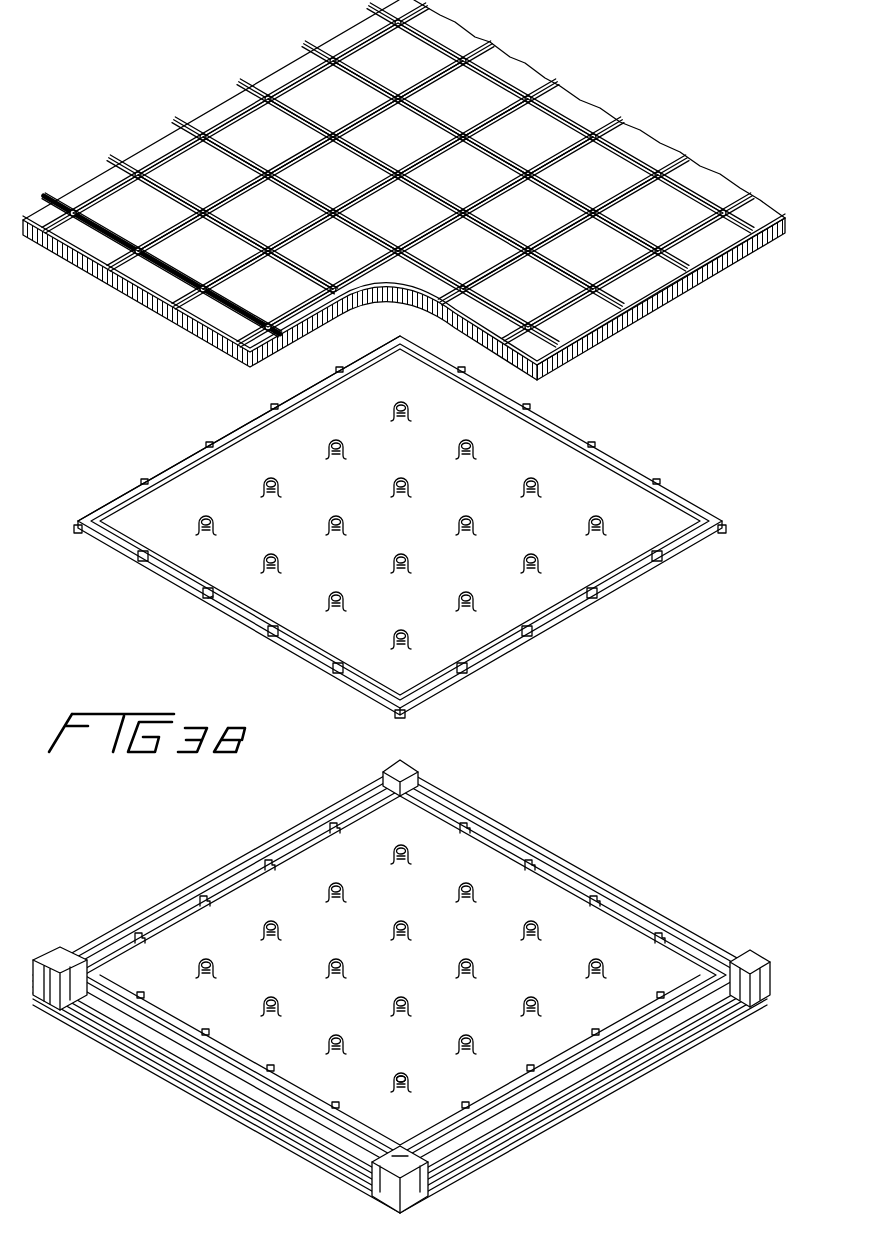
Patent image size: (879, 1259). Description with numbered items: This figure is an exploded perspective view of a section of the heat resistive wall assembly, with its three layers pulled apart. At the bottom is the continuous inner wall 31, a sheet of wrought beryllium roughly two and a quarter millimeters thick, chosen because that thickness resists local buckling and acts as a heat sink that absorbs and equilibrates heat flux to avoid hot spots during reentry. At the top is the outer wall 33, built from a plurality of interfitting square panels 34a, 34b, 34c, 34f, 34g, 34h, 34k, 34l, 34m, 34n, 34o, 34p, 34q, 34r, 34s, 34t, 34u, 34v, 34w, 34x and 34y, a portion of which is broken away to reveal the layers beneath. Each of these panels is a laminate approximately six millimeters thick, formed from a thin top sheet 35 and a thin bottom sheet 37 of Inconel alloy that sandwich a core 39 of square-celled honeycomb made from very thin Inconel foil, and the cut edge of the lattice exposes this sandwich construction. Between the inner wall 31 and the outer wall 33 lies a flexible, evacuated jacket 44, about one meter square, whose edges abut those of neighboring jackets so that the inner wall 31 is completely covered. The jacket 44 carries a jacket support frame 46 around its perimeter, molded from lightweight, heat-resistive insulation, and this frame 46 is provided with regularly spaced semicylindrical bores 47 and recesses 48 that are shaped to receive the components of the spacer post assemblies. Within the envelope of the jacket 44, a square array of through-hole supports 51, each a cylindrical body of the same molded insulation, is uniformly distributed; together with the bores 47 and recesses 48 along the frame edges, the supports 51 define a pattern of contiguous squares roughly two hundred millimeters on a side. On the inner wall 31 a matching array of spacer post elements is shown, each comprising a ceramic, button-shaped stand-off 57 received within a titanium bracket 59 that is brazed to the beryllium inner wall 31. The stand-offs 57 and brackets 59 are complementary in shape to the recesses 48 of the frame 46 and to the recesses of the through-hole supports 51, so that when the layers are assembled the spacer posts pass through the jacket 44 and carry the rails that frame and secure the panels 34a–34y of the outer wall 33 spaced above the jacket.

The inner wall 31 is at (401, 986).
The outer wall 33 is at (228, 96).
The panel 34a is at (120, 224).
The panel 34b is at (187, 262).
The panel 34c is at (250, 300).
The panel 34f is at (191, 186).
The panel 34g is at (255, 224).
The panel 34h is at (314, 262).
The panel 34k is at (256, 148).
The panel 34l is at (318, 186).
The panel 34m is at (383, 224).
The panel 34n is at (448, 262).
The panel 34o is at (513, 300).
The panel 34p is at (318, 110).
The panel 34q is at (380, 148).
The panel 34r is at (448, 186).
The panel 34s is at (511, 224).
The panel 34t is at (572, 262).
The panel 34u is at (387, 72).
The panel 34v is at (444, 110).
The panel 34w is at (510, 148).
The panel 34x is at (568, 186).
The panel 34y is at (636, 224).
The top sheet 35 is at (672, 287).
The bottom sheet 37 is at (647, 310).
The core 39 is at (590, 333).
The flexible evacuated jacket 44 is at (400, 527).
The jacket support frame 46 is at (183, 462).
The semicylindrical bore 47 is at (198, 598).
The recess 48 is at (208, 604).
The through-hole support 51 is at (278, 485).
The button-shaped stand-off 57 is at (413, 1072).
The titanium bracket 59 is at (395, 1070).